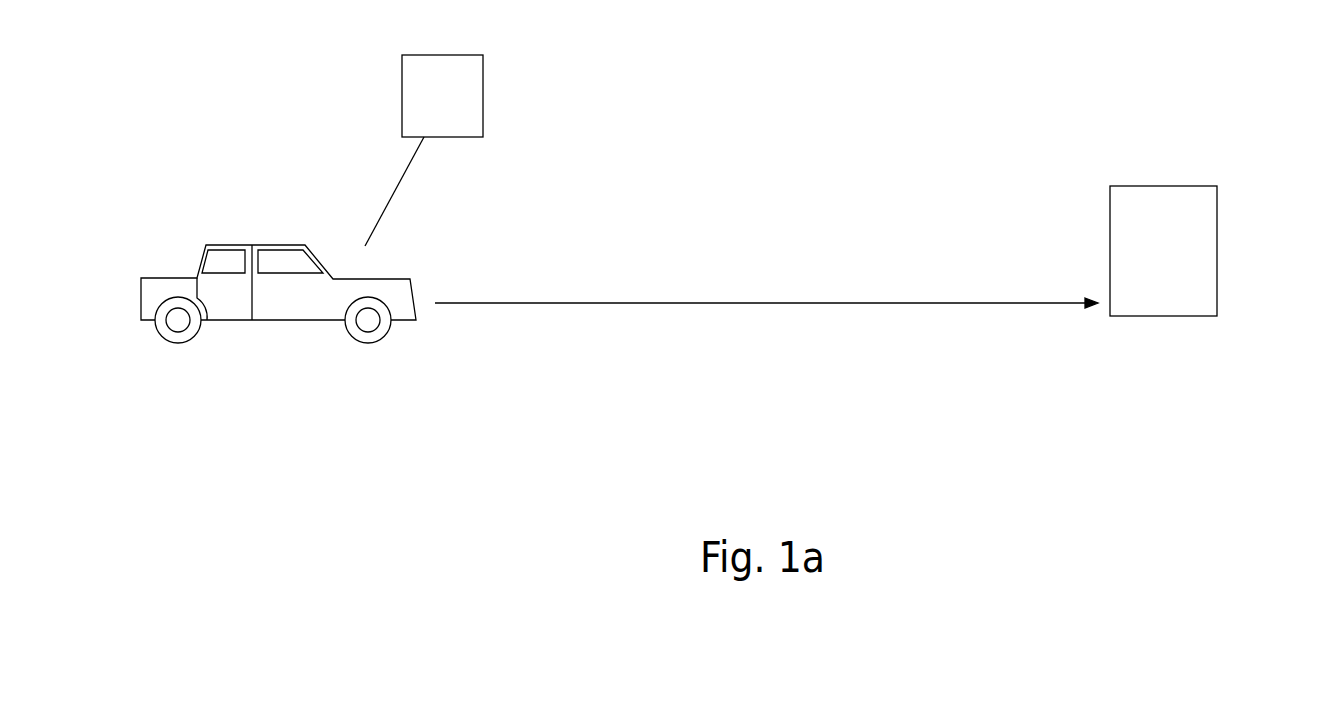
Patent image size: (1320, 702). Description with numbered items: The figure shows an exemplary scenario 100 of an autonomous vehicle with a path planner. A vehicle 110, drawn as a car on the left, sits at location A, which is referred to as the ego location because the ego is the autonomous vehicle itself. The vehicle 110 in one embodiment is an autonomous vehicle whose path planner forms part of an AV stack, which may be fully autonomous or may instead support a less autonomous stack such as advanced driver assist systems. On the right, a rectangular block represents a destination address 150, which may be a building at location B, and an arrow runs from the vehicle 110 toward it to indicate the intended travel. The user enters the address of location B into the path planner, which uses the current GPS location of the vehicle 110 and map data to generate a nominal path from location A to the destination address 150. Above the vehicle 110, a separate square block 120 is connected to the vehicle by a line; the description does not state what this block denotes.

The exemplary scenario 100 is at (766, 412).
The vehicle 110 is at (260, 220).
The communication node / satellite 120 is at (402, 90).
The destination address 150 is at (1192, 186).